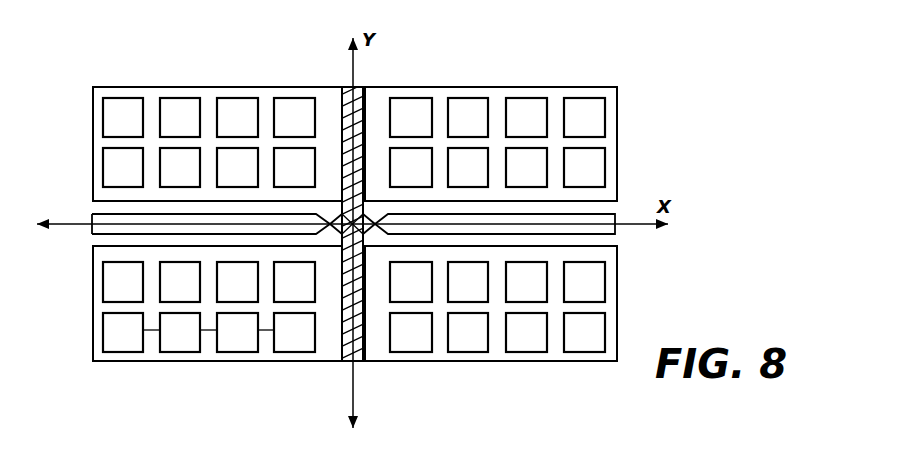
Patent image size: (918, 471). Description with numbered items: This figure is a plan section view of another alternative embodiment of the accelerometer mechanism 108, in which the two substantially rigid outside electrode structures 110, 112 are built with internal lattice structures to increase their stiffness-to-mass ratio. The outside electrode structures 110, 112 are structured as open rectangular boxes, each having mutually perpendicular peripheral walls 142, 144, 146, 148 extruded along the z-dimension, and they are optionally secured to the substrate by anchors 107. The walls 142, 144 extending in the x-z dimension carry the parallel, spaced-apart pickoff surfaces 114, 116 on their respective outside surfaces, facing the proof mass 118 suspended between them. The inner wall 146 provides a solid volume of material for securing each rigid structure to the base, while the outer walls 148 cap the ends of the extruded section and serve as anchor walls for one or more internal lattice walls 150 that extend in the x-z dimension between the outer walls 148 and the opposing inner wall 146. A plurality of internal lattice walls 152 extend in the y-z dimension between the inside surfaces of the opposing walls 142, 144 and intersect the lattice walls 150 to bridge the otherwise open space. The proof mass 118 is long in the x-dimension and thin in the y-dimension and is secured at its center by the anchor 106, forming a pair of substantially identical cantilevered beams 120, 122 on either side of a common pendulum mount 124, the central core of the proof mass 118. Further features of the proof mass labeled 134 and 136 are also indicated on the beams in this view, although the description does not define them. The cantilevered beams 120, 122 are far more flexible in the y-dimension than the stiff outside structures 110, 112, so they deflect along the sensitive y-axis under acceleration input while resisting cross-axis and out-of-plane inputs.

The anchor 106 is at (338, 242).
The anchors 107 is at (366, 113).
The accelerometer mechanism 108 is at (693, 157).
The first outside electrode structure 110 is at (553, 100).
The second outside electrode structure 112 is at (497, 345).
The first electrode or pickoff surface 114 is at (608, 204).
The second electrode or pickoff surface 116 is at (457, 97).
The proof mass 118 is at (633, 243).
The cantilevered beam 120 is at (618, 230).
The cantilevered beam 122 is at (92, 216).
The common pendulum mount 124 is at (337, 204).
The right beam 134 is at (565, 212).
The beam lower surface 136 is at (528, 234).
The peripheral wall 142 is at (190, 355).
The peripheral wall 144 is at (113, 247).
The inner wall 146 is at (330, 348).
The outer walls 148 is at (100, 345).
The internal lattice wall 150 is at (110, 305).
The internal lattice walls 152 is at (150, 352).